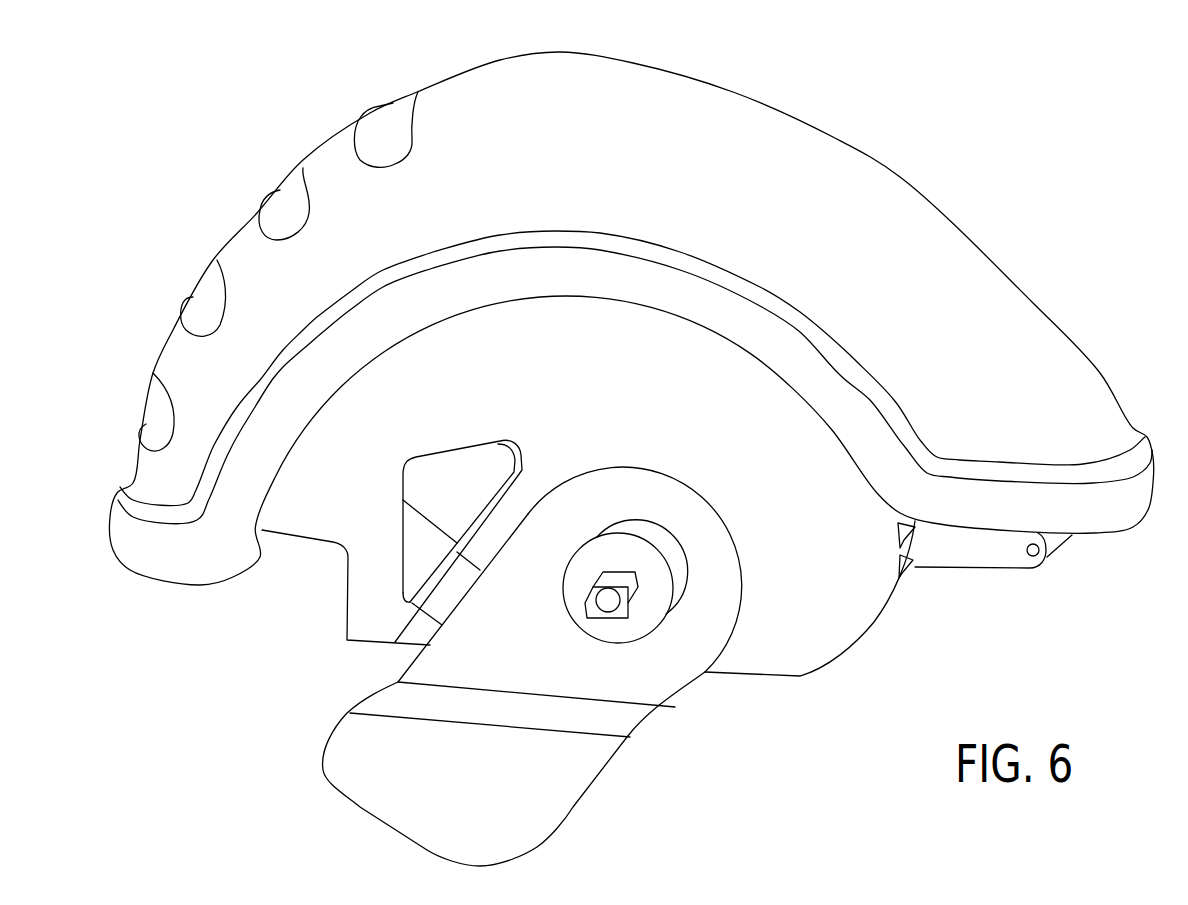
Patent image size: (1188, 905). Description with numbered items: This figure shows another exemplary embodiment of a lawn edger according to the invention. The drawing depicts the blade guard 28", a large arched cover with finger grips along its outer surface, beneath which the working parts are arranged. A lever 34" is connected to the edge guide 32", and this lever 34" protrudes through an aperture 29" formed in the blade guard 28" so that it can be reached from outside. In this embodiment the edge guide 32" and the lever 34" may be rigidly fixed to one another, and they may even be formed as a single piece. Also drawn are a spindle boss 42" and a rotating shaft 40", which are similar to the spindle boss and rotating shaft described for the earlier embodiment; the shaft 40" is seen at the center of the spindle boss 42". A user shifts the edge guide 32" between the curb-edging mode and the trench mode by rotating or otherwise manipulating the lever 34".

The blade guard 28 is at (933, 203).
The aperture 29 is at (455, 448).
The edge guide 32 is at (325, 774).
The lever 34 is at (393, 643).
The rotating shaft 40 is at (608, 600).
The spindle boss 42 is at (673, 580).